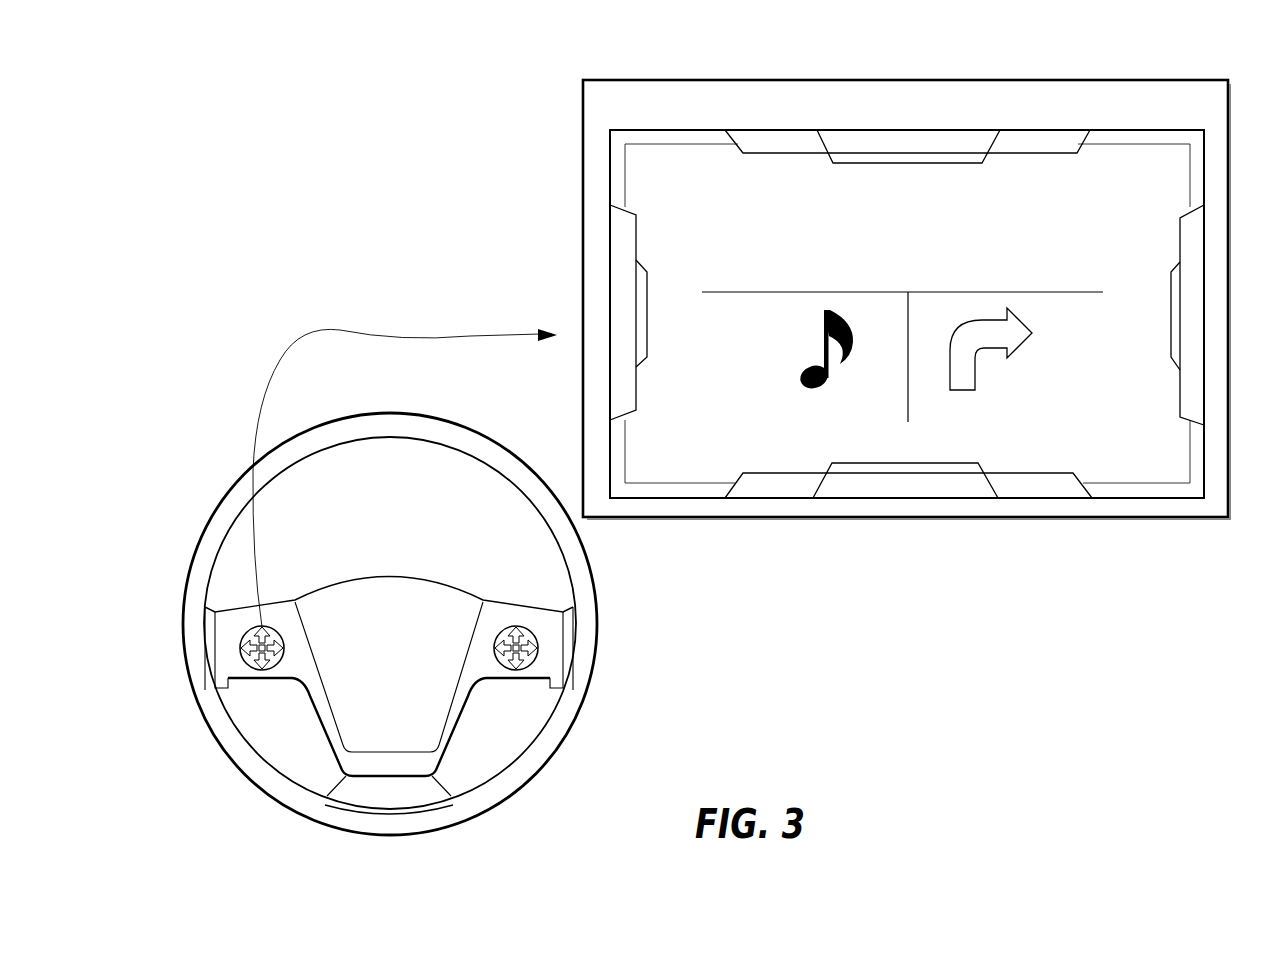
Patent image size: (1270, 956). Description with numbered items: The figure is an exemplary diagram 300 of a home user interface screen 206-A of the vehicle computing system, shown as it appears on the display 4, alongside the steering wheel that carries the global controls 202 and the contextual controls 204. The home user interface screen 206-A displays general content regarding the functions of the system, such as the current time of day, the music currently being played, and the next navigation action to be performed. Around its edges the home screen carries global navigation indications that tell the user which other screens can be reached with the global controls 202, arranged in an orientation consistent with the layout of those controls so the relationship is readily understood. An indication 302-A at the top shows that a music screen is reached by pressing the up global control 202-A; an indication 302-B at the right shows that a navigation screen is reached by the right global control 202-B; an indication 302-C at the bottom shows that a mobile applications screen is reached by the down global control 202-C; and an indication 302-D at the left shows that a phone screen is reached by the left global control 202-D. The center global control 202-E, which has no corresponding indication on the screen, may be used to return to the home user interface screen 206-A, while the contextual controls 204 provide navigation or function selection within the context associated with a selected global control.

The diagram 300 is at (300, 92).
The display 4 is at (583, 183).
The home user interface screen 206-A is at (682, 167).
The indication 302-A is at (903, 129).
The indication 302-B is at (1170, 323).
The indication 302-C is at (908, 498).
The indication 302-D is at (610, 310).
The global controls 202 is at (308, 669).
The contextual controls 204 is at (506, 670).
The up global control 202-A is at (283, 627).
The right global control 202-B is at (284, 648).
The down global control 202-C is at (268, 662).
The left global control 202-D is at (250, 668).
The center global control 202-E is at (268, 648).